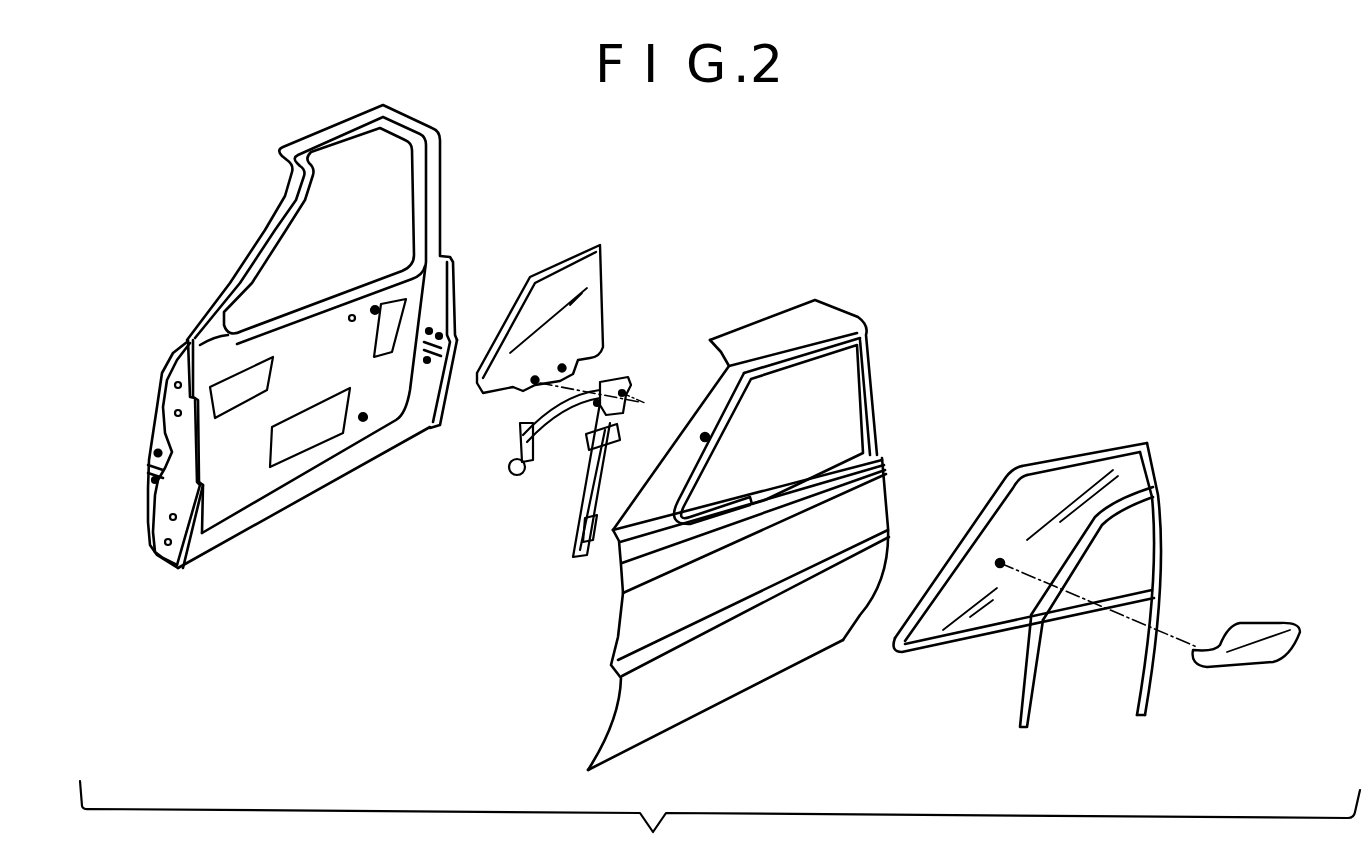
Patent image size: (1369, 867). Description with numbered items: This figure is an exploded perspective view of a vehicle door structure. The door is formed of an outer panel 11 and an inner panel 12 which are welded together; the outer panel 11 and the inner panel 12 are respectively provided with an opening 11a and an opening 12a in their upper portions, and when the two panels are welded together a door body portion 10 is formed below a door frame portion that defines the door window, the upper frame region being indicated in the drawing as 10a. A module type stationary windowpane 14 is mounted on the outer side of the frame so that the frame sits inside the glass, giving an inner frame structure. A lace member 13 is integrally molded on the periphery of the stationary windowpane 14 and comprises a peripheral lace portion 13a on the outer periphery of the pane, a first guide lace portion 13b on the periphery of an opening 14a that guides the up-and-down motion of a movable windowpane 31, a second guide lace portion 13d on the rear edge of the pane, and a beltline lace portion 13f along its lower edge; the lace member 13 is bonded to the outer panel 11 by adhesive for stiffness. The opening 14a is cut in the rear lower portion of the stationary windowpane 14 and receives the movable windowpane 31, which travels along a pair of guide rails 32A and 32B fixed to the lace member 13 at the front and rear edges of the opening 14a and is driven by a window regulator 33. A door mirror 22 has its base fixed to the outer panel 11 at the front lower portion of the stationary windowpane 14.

The door body portion 10 is at (520, 620).
The window frame of door 10a is at (838, 215).
The outer panel 11 is at (691, 487).
The opening of outer panel 11a is at (797, 393).
The inner panel 12 is at (399, 367).
The opening of inner panel 12a is at (393, 208).
The lace member 13 is at (1081, 585).
The peripheral lace portion 13a is at (980, 527).
The first guide lace portion 13b is at (1093, 533).
The second guide lace portion 13d is at (1160, 468).
The beltline lace portion 13f is at (1087, 612).
The stationary windowpane 14 is at (1060, 490).
The opening of stationary windowpane 14a is at (1143, 527).
The door mirror 22 is at (1275, 667).
The movable windowpane 31 is at (605, 292).
The guide rail 32A is at (1022, 727).
The guide rail 32B is at (1137, 715).
The window regulator 33 is at (578, 503).